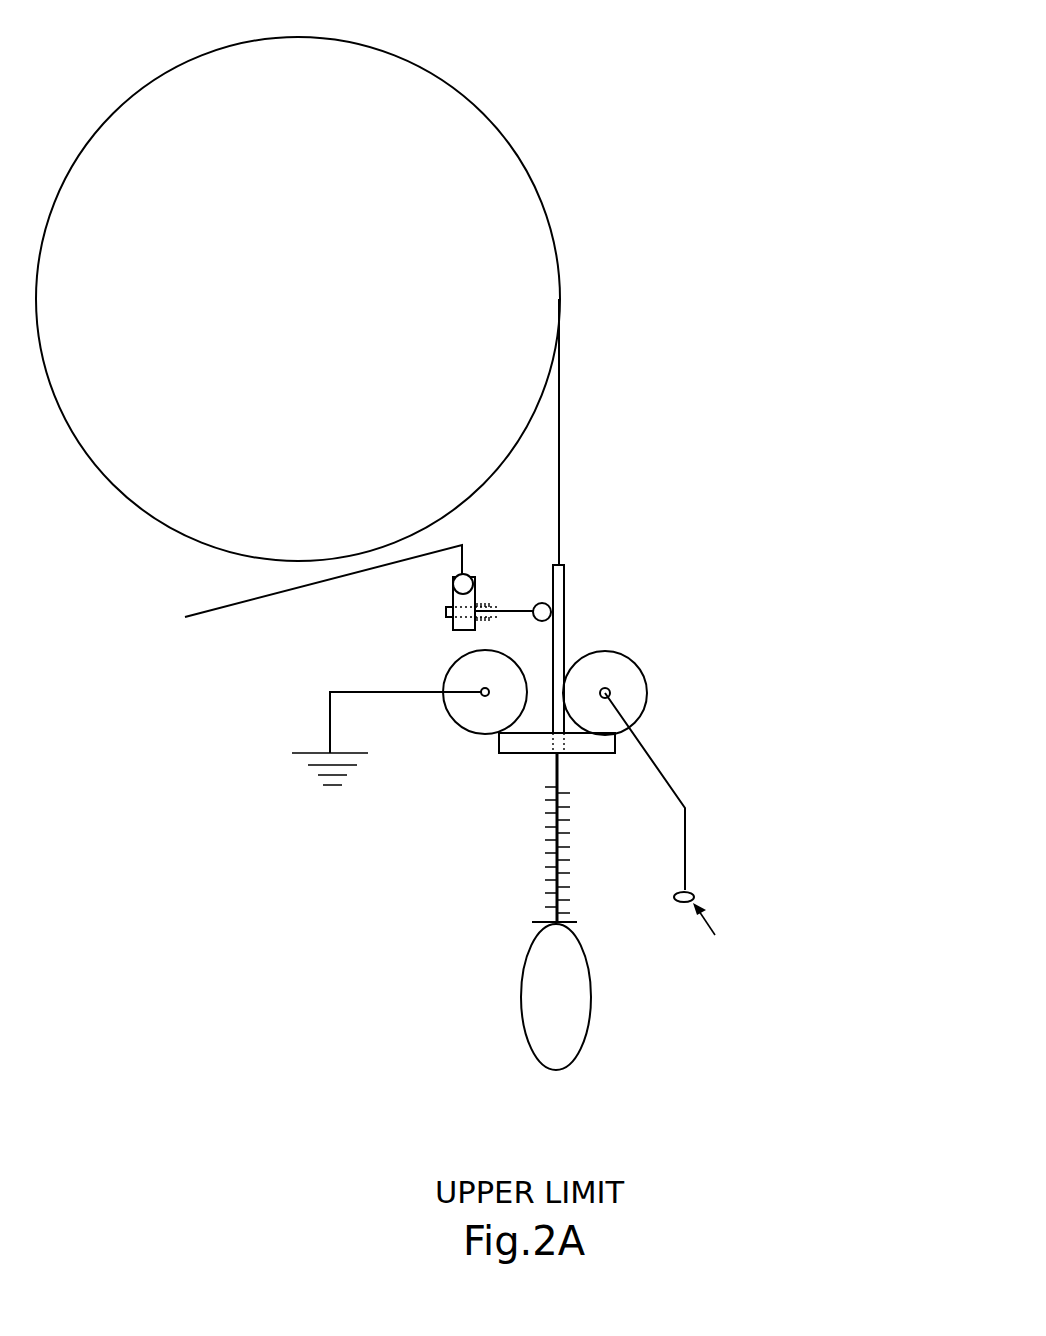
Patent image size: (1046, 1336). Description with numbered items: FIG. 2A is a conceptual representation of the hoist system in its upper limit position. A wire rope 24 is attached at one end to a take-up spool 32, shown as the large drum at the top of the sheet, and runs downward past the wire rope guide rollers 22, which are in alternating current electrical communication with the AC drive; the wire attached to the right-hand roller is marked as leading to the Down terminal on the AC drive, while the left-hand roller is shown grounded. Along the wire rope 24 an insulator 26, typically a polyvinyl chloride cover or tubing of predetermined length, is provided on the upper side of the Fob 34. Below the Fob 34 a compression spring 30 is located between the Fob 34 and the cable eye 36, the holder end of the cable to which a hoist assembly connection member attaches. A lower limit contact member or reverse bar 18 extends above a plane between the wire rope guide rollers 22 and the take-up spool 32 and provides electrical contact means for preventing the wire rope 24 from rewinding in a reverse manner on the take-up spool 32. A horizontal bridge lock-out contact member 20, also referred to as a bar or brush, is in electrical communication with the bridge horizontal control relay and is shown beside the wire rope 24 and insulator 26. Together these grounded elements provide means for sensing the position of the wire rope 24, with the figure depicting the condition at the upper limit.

The lower limit contact bar 18 is at (298, 599).
The horizontal bridge lock-out contact member 20 is at (575, 550).
The wire rope guide rollers 22 is at (447, 667).
The wire rope 24 is at (560, 425).
The insulator 26 is at (563, 630).
The compression spring 30 is at (552, 838).
The take-up spool 32 is at (515, 139).
The Fob 34 is at (500, 753).
The cable eye 36 is at (520, 985).